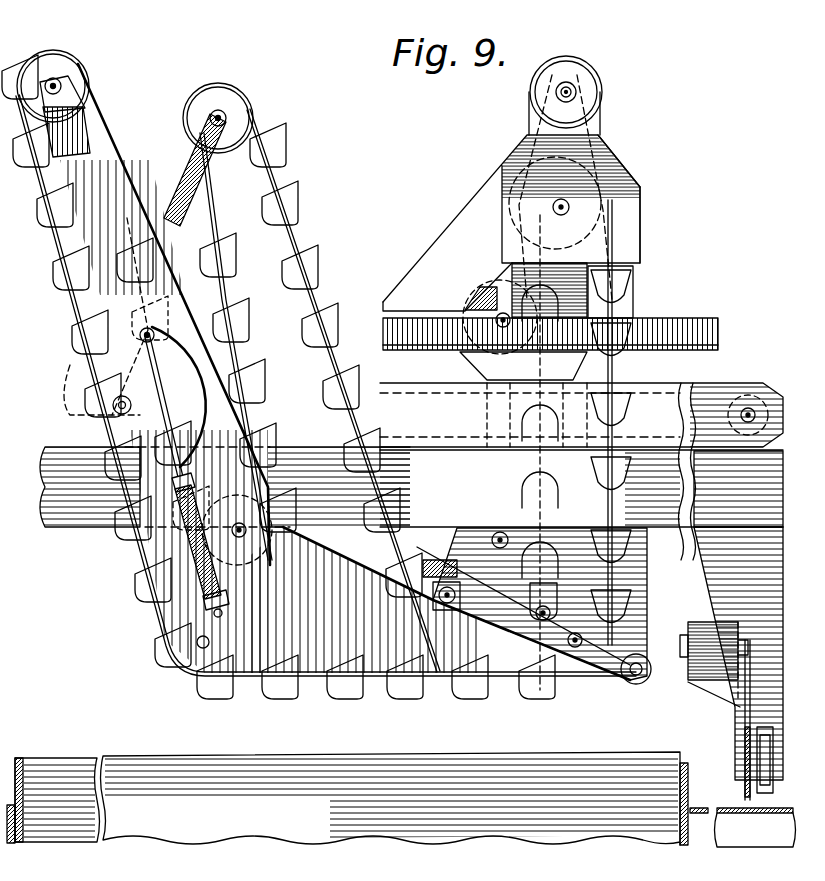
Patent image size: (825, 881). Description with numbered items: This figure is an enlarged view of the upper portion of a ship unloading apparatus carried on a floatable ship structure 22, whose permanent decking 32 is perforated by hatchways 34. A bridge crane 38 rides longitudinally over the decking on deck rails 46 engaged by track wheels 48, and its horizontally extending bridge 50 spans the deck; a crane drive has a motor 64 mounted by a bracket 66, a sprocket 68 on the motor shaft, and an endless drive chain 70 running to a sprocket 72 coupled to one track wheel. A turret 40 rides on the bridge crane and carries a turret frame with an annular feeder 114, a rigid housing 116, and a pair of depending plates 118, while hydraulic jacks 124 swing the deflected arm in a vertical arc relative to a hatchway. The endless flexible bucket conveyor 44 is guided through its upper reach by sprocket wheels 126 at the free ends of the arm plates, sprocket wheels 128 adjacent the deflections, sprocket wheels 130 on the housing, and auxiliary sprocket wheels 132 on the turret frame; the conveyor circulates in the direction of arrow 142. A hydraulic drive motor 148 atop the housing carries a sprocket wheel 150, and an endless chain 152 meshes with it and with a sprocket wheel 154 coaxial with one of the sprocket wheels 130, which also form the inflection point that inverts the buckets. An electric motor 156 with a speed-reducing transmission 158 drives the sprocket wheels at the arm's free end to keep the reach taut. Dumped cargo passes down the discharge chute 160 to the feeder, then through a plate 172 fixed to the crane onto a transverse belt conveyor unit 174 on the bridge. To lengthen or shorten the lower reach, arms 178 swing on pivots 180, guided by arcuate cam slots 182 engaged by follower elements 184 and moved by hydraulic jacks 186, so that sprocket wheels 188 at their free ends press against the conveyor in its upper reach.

The ship structure 22 is at (76, 752).
The permanent decking 32 is at (747, 817).
The hatchway 34 is at (678, 813).
The bridge crane 38 is at (66, 535).
The turret 40 is at (617, 125).
The endless flexible bucket conveyor 44 is at (350, 700).
The deck rail 46 is at (787, 813).
The track wheel 48 is at (770, 740).
The bridge 50 is at (738, 615).
The motor 64 is at (706, 644).
The bracket 66 is at (695, 680).
The sprocket 68 is at (750, 640).
The endless drive chain 70 is at (745, 702).
The sprocket 72 is at (745, 771).
The annular feeder 114 is at (712, 320).
The housing 116 is at (618, 162).
The depending plate 118 is at (640, 623).
The hydraulic jack 124 is at (612, 508).
The sprocket wheel 126 is at (50, 52).
The sprocket wheel 128 is at (187, 617).
The sprocket wheel 130 is at (642, 193).
The sprocket wheel 132 is at (497, 292).
The arrow 142 is at (624, 880).
The hydraulic drive motor 148 is at (568, 78).
The sprocket wheel 150 is at (588, 90).
The endless chain 152 is at (543, 131).
The sprocket wheel 154 is at (527, 200).
The electric motor 156 is at (103, 115).
The speed-reducing transmission 158 is at (62, 80).
The discharge chute 160 is at (410, 263).
The plate 172 is at (710, 348).
The belt conveyor unit 174 is at (766, 372).
The arm 178 is at (167, 210).
The pivot 180 is at (120, 404).
The arcuate cam slot 182 is at (228, 297).
The follower element 184 is at (143, 323).
The hydraulic jack 186 is at (193, 540).
The sprocket wheel 188 is at (248, 112).